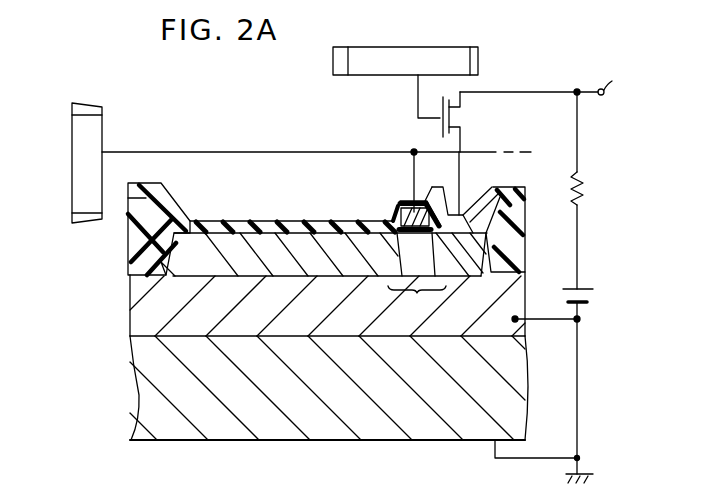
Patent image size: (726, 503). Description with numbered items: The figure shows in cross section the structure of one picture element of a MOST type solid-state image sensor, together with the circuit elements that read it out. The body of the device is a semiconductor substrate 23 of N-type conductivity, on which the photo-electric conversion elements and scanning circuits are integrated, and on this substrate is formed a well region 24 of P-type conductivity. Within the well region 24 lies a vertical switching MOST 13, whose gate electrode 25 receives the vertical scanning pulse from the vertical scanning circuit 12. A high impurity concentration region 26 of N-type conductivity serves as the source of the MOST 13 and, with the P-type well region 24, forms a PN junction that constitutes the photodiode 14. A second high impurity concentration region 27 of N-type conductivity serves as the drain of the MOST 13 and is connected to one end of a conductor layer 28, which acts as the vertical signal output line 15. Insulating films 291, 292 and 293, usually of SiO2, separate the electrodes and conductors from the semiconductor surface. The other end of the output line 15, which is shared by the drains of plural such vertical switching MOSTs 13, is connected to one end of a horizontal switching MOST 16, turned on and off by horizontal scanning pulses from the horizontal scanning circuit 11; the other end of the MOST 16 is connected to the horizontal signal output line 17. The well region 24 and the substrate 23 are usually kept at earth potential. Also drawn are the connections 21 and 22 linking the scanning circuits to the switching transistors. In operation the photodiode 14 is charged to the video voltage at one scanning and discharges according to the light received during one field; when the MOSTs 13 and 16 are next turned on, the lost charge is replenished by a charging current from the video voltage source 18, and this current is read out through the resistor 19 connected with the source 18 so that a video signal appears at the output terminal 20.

The horizontal scanning circuit 11 is at (445, 48).
The vertical scanning circuit 12 is at (74, 186).
The vertical switching MOST 13 is at (417, 305).
The photodiode 14 is at (290, 277).
The vertical signal output line 15 is at (460, 194).
The horizontal switching MOST 16 is at (458, 115).
The horizontal signal output line 17 is at (528, 95).
The video voltage source 18 is at (590, 298).
The resistor 19 is at (582, 191).
The output terminal 20 is at (602, 76).
The wire 21 is at (417, 95).
The wire 22 is at (210, 152).
The semiconductor substrate 23 is at (420, 441).
The well region 24 is at (130, 308).
The gate electrode 25 is at (400, 212).
The high impurity concentration region of N-type conductivity 26 is at (237, 271).
The high impurity concentration region of N-type conductivity 27 is at (471, 276).
The conductor layer 28 is at (506, 183).
The insulating film 291 is at (417, 240).
The insulating film 292 is at (176, 207).
The insulating film 293 is at (131, 238).